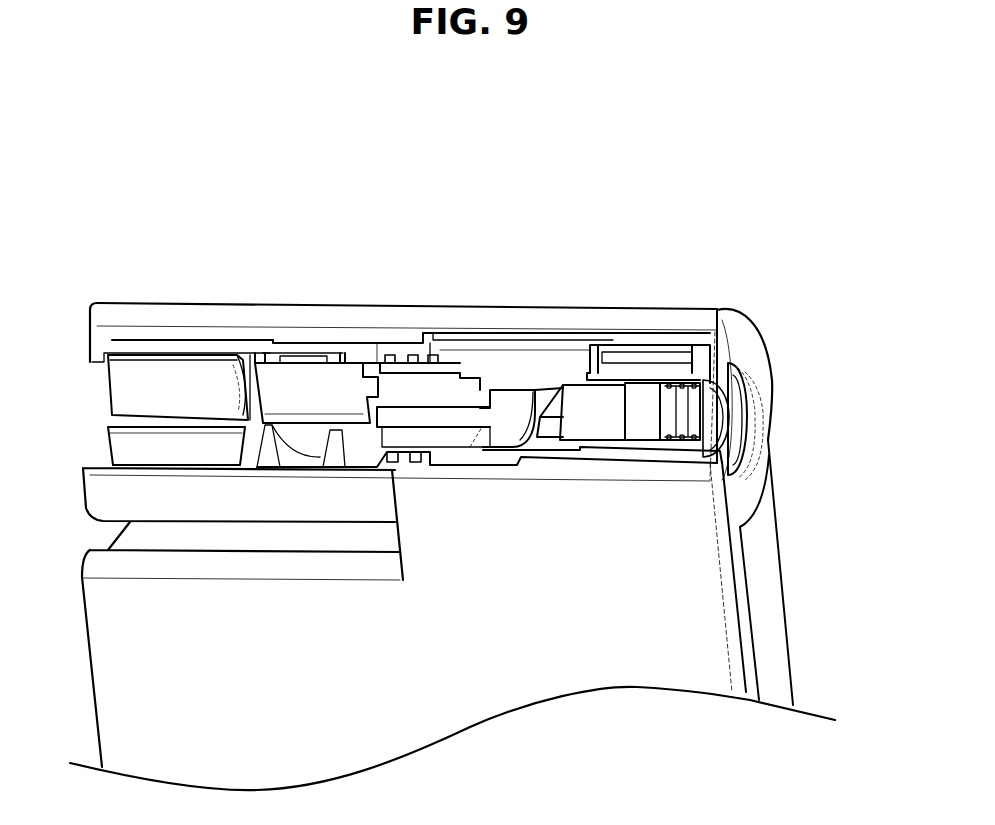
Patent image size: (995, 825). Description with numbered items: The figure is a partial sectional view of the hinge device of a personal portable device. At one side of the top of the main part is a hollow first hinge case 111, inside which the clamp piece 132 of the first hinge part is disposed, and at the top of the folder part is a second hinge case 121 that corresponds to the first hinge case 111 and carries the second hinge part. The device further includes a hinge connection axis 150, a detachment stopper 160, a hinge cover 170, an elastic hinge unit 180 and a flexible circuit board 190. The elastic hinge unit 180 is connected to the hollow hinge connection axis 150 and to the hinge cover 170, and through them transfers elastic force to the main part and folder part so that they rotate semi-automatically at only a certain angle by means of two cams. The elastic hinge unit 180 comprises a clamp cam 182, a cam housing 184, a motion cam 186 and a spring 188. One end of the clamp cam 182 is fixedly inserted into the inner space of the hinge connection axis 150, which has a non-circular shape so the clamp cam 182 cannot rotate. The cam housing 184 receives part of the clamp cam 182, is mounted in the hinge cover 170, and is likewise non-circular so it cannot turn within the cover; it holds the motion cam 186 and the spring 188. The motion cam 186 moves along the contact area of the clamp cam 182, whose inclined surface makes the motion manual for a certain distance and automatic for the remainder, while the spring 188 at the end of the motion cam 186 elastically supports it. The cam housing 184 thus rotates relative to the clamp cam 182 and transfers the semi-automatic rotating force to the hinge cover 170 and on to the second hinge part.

The first hinge case 111 is at (148, 305).
The second hinge case 121 is at (457, 312).
The clamp piece 132 is at (292, 388).
The hinge connection axis 150 is at (393, 383).
The detachment stopper 160 is at (397, 352).
The hinge cover 170 is at (542, 335).
The elastic hinge unit 180 is at (678, 118).
The clamp cam 182 is at (657, 408).
The cam housing 184 is at (620, 400).
The motion cam 186 is at (680, 380).
The spring 188 is at (700, 410).
The flexible circuit board 190 is at (513, 407).